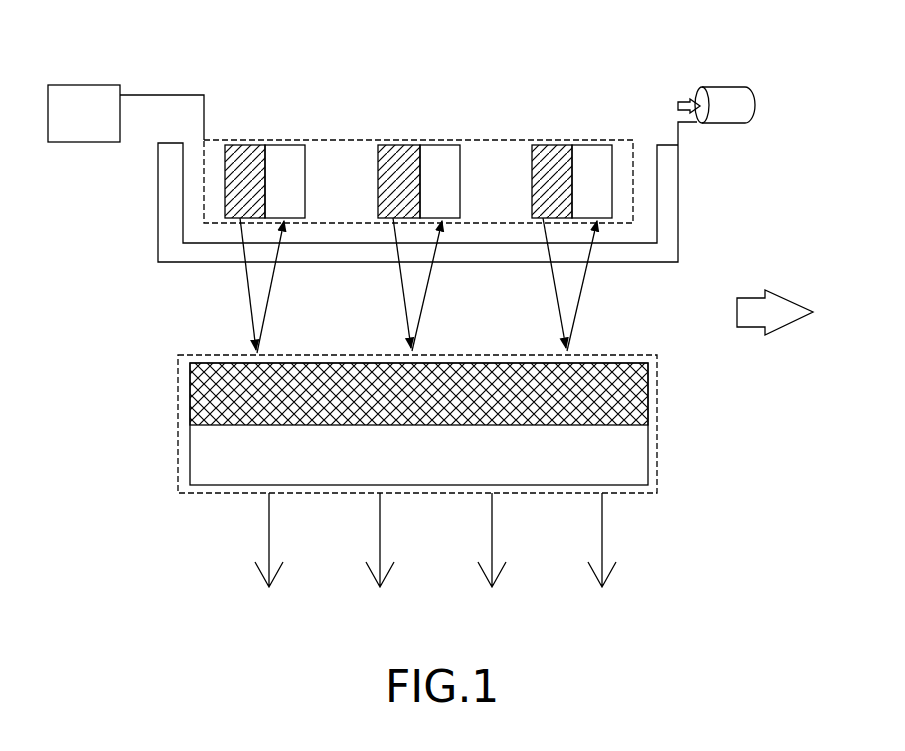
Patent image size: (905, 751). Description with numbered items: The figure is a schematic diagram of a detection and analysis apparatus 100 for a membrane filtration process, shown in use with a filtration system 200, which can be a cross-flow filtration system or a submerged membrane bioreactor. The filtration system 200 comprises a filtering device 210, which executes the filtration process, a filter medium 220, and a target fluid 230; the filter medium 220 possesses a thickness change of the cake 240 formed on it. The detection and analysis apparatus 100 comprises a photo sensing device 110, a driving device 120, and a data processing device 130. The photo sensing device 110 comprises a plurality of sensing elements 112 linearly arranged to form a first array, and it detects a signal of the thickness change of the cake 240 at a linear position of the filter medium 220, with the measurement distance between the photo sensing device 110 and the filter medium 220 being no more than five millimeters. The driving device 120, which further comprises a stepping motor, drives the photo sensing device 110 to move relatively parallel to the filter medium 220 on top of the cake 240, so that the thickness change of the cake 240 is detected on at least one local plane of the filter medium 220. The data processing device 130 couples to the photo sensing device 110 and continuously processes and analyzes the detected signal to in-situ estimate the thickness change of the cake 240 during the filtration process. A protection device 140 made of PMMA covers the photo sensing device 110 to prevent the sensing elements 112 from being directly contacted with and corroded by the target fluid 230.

The detection and analysis apparatus 100 is at (642, 92).
The photo sensing device 110 is at (468, 140).
The sensing element 112 is at (260, 145).
The driving device 120 is at (720, 88).
The data processing device 130 is at (102, 127).
The protection device 140 is at (672, 180).
The filtration system 200 is at (648, 332).
The filtering device 210 is at (662, 470).
The filter medium 220 is at (440, 466).
The target fluid 230 is at (777, 300).
The cake 240 is at (652, 392).